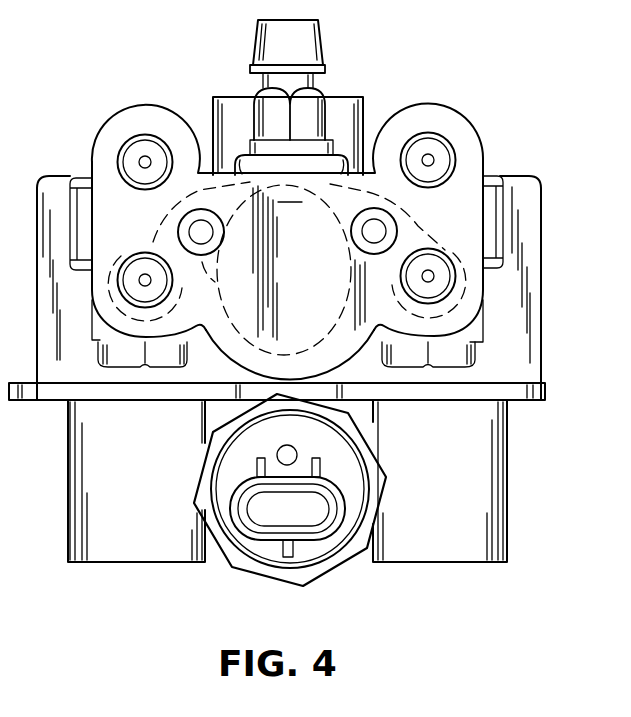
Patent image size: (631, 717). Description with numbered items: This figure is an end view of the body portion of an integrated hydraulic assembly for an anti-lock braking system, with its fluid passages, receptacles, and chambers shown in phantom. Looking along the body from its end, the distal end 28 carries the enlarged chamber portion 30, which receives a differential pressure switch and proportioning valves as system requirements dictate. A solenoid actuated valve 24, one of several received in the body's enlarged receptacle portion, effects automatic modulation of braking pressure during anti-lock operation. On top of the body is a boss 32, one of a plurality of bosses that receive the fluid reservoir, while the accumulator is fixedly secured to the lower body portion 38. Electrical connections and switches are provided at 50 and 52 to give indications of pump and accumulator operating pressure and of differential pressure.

The solenoid actuated valve 24 is at (492, 463).
The distal end 28 is at (472, 327).
The enlarged chamber portion 30 is at (350, 342).
The boss 32 is at (353, 133).
The lower body portion 38 is at (220, 415).
The electrical connection 50 is at (347, 550).
The electrical connection 52 is at (320, 46).